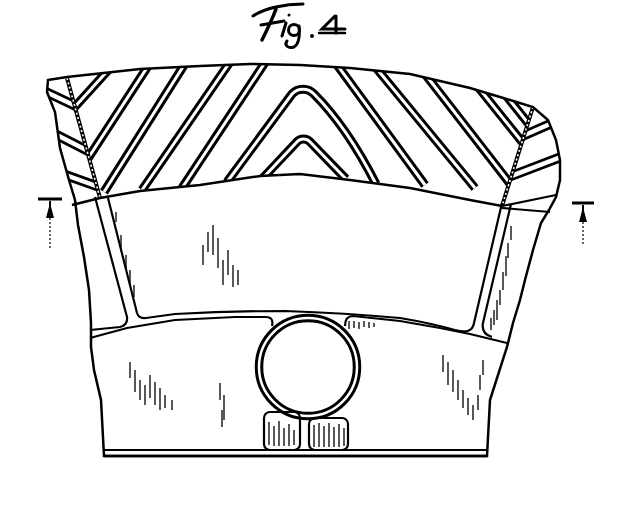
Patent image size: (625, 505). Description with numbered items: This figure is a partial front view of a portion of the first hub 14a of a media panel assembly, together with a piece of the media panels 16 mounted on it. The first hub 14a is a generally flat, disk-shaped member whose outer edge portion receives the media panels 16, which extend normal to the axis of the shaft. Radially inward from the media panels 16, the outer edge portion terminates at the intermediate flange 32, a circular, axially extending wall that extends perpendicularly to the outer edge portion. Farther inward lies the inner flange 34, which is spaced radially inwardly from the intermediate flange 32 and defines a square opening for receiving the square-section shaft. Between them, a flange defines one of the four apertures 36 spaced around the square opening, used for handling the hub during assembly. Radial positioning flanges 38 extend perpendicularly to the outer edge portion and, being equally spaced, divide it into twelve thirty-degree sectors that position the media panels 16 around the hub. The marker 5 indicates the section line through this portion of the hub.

The media panel 16 is at (464, 99).
The radial positioning flange 38 is at (118, 250).
The intermediate flange 32 is at (187, 318).
The aperture 36 is at (330, 378).
The inner flange 34 is at (187, 457).
The first hub 14a is at (374, 416).
The section line 5- 5 is at (316, 239).